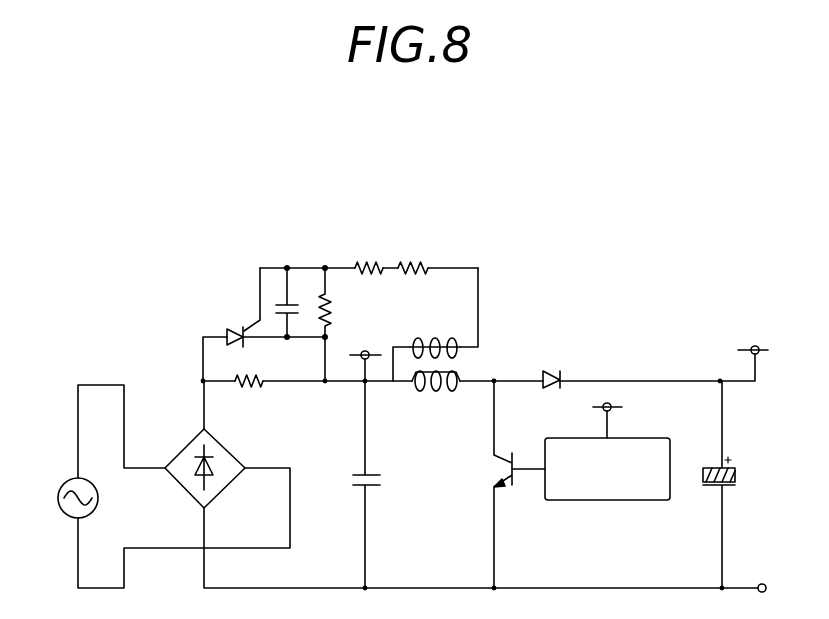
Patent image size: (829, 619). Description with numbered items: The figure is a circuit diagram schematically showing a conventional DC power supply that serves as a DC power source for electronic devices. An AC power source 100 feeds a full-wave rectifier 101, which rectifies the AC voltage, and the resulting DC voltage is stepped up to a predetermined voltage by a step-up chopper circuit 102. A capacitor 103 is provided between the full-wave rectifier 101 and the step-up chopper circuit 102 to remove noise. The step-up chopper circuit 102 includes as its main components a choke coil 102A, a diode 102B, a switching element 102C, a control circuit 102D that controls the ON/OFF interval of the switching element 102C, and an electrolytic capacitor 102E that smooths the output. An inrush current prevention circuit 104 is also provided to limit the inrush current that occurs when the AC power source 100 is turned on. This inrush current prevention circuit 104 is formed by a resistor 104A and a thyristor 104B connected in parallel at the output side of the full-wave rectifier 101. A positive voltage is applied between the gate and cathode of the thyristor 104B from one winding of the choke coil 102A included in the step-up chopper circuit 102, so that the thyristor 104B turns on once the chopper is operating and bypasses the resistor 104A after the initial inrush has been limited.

The AC power source 100 is at (65, 510).
The full-wave rectifier 101 is at (188, 458).
The step-up chopper circuit 102 is at (595, 428).
The choke coil 102A is at (430, 397).
The diode 102B is at (555, 368).
The switching element 102C is at (497, 470).
The control circuit 102D is at (612, 502).
The electrolytic capacitor 102E is at (733, 488).
The capacitor 103 is at (373, 493).
The inrush current prevention circuit 104 is at (296, 310).
The resistor 104A is at (260, 393).
The thyristor 104B is at (228, 332).